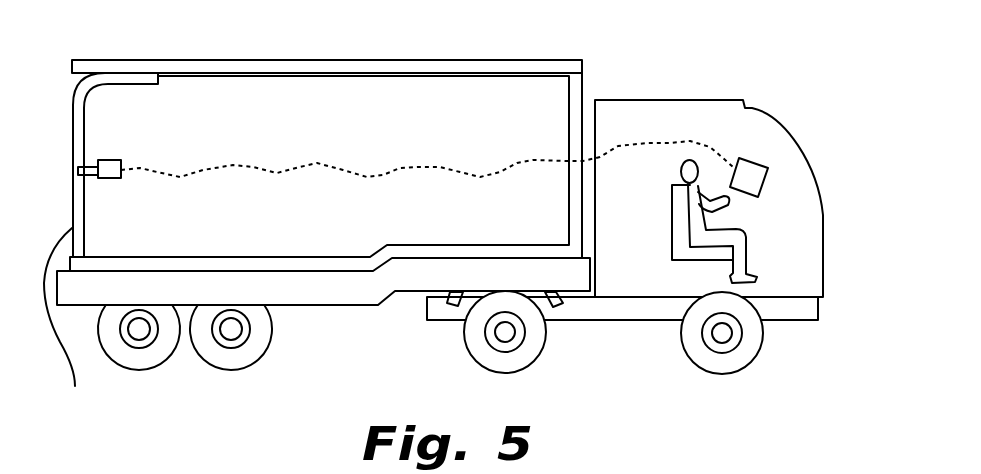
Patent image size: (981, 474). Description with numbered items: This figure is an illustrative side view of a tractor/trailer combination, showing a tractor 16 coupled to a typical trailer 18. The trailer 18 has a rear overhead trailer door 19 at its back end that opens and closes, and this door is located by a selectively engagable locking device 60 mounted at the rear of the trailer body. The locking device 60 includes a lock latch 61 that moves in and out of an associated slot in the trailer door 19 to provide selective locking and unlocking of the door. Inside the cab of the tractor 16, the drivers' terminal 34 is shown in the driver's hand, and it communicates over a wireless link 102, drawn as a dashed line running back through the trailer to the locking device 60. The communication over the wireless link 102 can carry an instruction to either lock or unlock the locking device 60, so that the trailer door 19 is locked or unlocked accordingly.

The trailer 18 is at (328, 60).
The tractor 16 is at (635, 100).
The drivers' terminal 34 is at (751, 158).
The wireless link 102 is at (383, 175).
The locking device 60 is at (110, 178).
The lock latch 61 is at (91, 178).
The trailer door 19 is at (79, 338).